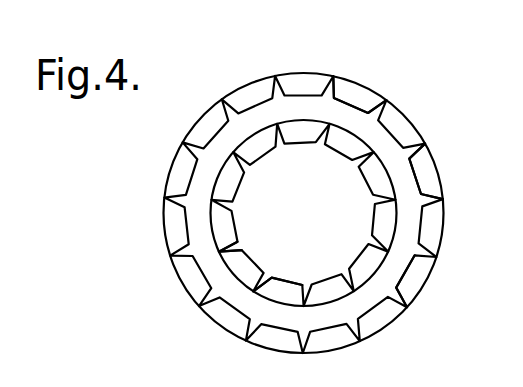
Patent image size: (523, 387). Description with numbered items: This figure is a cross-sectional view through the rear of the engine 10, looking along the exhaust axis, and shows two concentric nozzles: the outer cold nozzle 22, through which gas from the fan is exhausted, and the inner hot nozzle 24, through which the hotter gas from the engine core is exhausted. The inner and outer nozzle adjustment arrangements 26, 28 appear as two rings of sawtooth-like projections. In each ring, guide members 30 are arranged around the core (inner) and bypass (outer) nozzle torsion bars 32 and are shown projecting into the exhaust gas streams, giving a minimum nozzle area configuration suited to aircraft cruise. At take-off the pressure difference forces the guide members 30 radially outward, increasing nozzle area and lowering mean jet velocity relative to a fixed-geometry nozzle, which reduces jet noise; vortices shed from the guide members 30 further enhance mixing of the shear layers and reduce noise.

The engine 10 is at (153, 247).
The outer cold nozzle 22 is at (249, 70).
The inner hot nozzle 24 is at (367, 282).
The inner nozzle adjustment arrangement 26 is at (426, 282).
The outer nozzle adjustment arrangement 28 is at (223, 175).
The guide member 30 is at (428, 174).
The torsion bar 32 is at (361, 70).